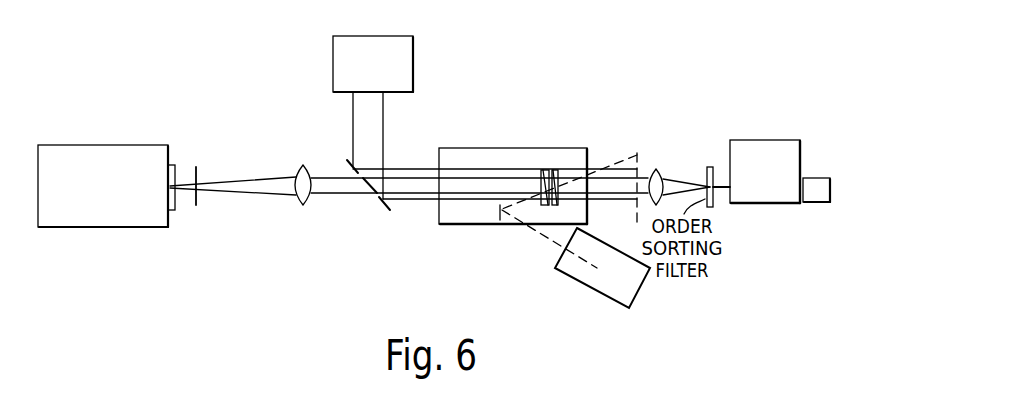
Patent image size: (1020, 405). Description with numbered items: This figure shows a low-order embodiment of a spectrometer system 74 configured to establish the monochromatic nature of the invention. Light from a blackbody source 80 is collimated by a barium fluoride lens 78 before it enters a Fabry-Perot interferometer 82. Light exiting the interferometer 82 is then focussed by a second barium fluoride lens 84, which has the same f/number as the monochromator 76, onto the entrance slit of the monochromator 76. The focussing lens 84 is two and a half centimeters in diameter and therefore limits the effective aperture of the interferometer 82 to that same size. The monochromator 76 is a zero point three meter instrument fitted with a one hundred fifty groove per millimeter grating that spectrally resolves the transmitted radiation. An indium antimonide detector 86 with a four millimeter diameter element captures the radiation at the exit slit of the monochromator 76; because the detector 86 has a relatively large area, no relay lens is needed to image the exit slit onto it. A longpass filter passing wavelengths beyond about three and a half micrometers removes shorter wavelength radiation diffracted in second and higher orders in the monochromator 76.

The spectrometer system 74 is at (257, 96).
The monochromator 76 is at (762, 140).
The barium fluoride lens 78 is at (303, 205).
The blackbody source 80 is at (145, 227).
The Fabry-Perot interferometer 82 is at (527, 140).
The second barium fluoride lens 84 is at (657, 168).
The indium antimonide detector 86 is at (815, 202).